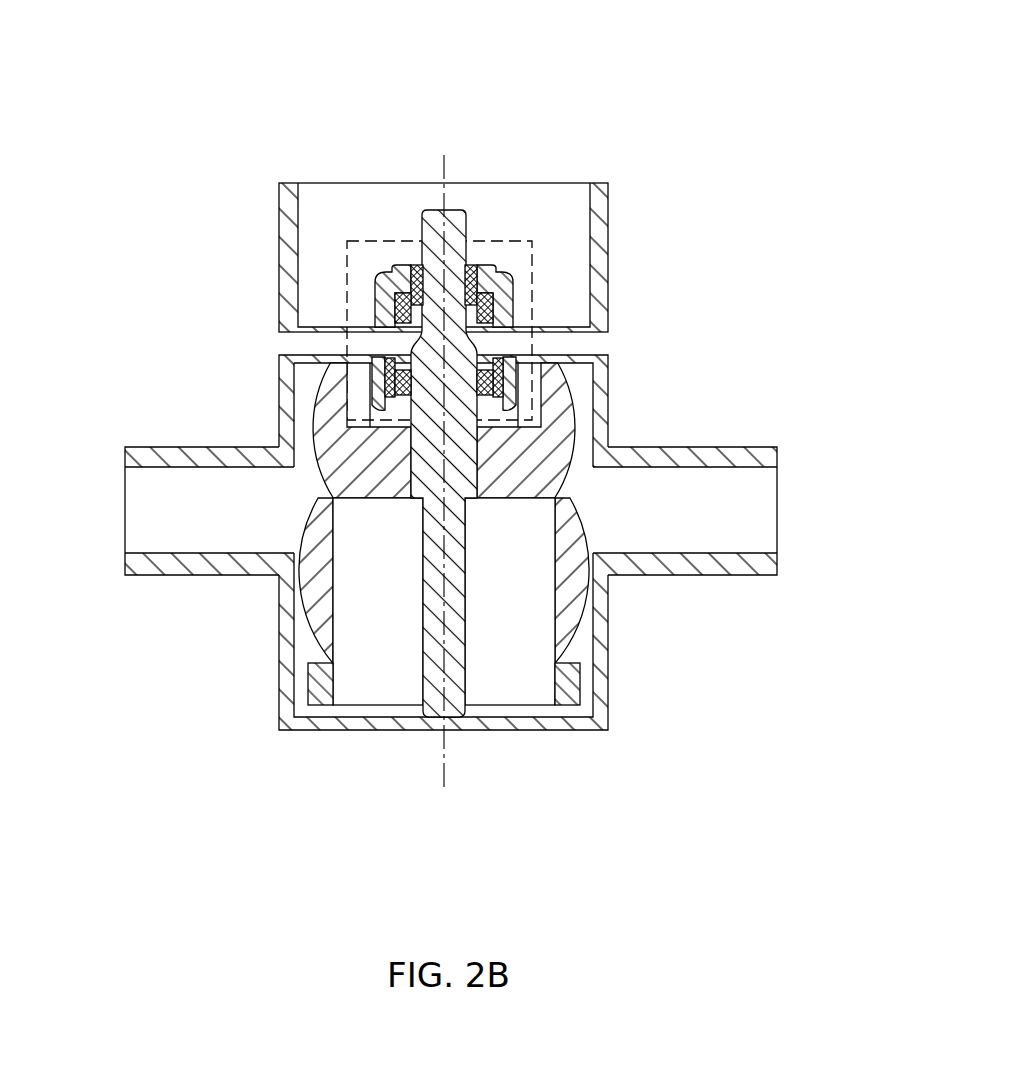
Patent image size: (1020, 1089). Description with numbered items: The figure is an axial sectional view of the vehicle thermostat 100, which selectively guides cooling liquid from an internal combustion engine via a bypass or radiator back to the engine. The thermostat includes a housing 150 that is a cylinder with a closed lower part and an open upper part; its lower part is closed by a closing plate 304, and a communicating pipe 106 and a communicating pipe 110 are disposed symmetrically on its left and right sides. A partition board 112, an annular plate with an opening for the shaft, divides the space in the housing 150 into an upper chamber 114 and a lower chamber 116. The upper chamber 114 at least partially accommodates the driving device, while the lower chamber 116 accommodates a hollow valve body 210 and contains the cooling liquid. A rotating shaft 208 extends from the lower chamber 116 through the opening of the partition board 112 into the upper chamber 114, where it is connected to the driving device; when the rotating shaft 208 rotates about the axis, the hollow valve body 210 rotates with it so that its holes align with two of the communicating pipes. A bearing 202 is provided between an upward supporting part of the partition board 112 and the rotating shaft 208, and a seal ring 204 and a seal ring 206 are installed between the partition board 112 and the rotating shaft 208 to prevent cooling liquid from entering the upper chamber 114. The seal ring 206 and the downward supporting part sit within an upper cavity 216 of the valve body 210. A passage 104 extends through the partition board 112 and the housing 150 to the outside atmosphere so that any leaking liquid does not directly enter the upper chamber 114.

The vehicle thermostat 100 is at (436, 425).
The passage 104 is at (605, 346).
The communicating pipe 106 is at (125, 448).
The communicating pipe 110 is at (690, 447).
The partition board 112 is at (275, 347).
The upper chamber 114 is at (568, 203).
The lower chamber 116 is at (307, 632).
The housing 150 is at (622, 232).
The bearing 202 is at (472, 240).
The seal ring 204 is at (505, 290).
The seal ring 206 is at (510, 327).
The rotating shaft 208 is at (460, 210).
The hollow valve body 210 is at (582, 422).
The upper cavity 216 is at (527, 387).
The closing plate 304 is at (572, 723).